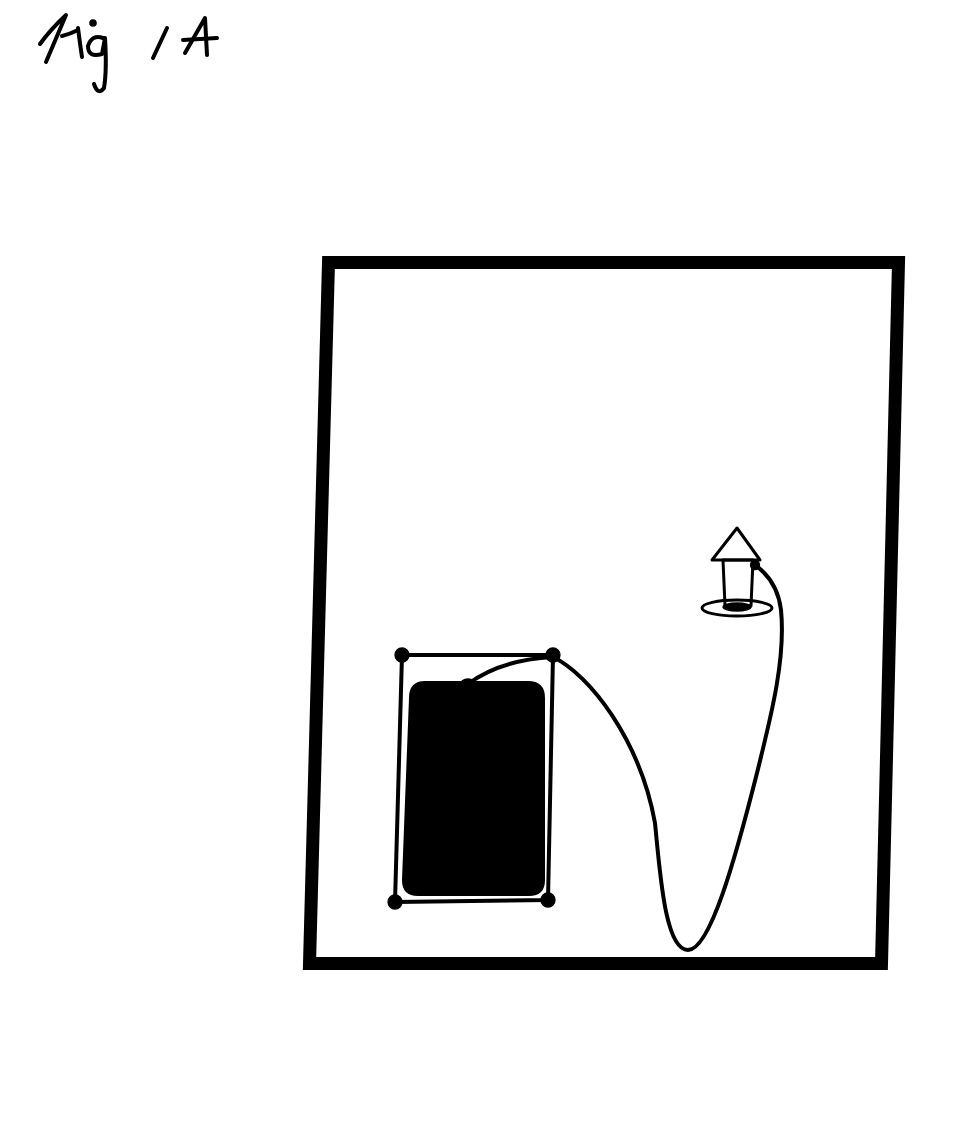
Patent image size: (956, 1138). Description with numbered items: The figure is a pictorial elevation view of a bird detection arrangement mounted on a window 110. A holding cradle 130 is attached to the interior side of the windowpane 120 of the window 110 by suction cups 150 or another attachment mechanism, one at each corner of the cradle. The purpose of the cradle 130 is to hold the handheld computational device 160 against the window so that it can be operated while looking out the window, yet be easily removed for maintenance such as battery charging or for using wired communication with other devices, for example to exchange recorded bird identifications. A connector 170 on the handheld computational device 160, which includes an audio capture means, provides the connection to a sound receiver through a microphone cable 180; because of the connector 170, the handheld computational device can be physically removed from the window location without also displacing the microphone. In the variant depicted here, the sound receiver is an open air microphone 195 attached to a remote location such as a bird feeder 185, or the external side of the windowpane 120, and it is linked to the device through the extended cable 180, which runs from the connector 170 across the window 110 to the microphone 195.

The window 110 is at (283, 309).
The windowpane 120 is at (448, 321).
The holding cradle 130 is at (385, 750).
The suction cups 150 is at (383, 658).
The handheld computational device 160 is at (552, 803).
The connector 170 is at (468, 680).
The microphone cable 180 is at (693, 825).
The bird feeder 185 is at (708, 555).
The open air microphone 195 is at (763, 565).